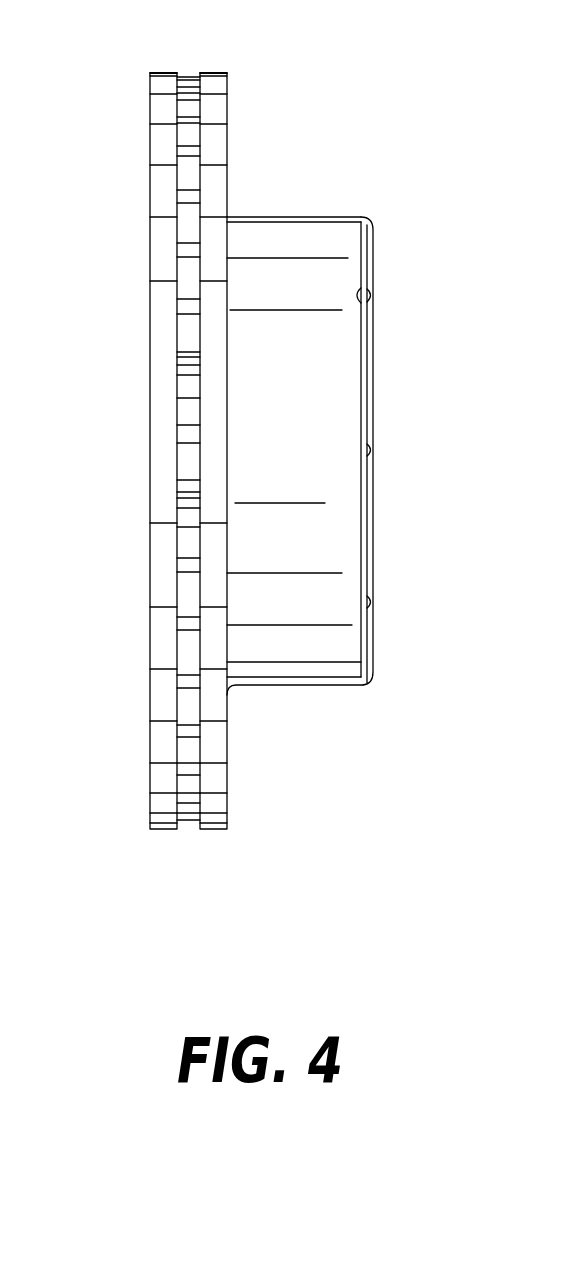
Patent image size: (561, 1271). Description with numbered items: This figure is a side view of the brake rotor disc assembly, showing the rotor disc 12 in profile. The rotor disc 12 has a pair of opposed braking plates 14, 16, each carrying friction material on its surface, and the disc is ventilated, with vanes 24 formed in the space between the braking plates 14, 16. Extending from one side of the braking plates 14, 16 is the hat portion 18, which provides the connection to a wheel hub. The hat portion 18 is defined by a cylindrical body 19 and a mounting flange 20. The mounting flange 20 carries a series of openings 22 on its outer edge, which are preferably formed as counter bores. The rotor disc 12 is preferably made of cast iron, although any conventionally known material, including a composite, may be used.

The rotor disc 12 is at (227, 73).
The braking plate 14 is at (227, 130).
The braking plate 16 is at (150, 150).
The hat portion 18 is at (313, 216).
The cylindrical body 19 is at (308, 665).
The mounting flange 20 is at (374, 506).
The openings 22 is at (355, 293).
The vanes 24 is at (185, 630).